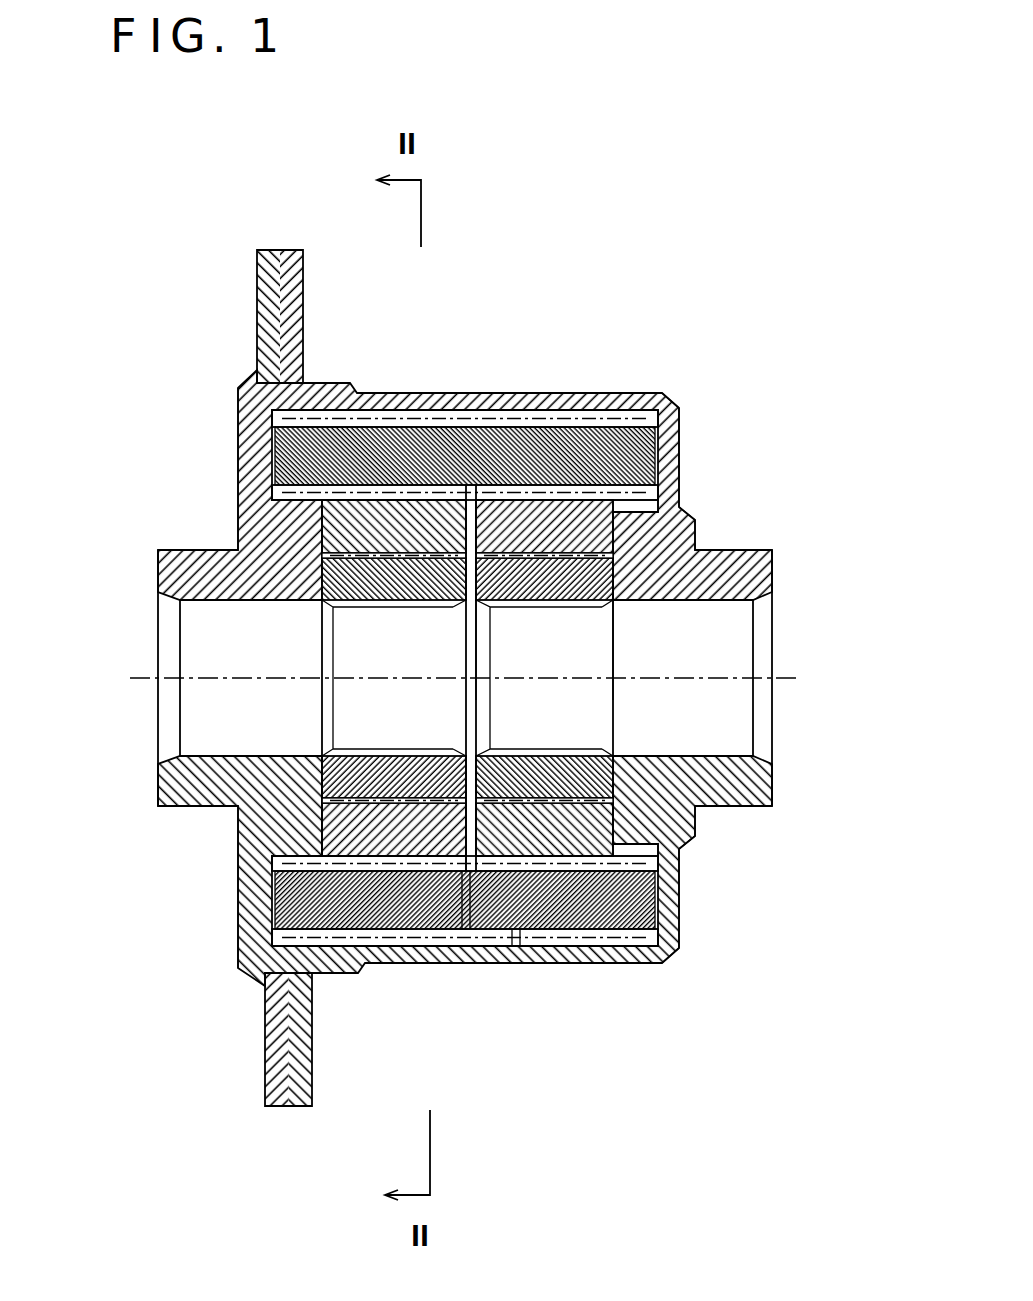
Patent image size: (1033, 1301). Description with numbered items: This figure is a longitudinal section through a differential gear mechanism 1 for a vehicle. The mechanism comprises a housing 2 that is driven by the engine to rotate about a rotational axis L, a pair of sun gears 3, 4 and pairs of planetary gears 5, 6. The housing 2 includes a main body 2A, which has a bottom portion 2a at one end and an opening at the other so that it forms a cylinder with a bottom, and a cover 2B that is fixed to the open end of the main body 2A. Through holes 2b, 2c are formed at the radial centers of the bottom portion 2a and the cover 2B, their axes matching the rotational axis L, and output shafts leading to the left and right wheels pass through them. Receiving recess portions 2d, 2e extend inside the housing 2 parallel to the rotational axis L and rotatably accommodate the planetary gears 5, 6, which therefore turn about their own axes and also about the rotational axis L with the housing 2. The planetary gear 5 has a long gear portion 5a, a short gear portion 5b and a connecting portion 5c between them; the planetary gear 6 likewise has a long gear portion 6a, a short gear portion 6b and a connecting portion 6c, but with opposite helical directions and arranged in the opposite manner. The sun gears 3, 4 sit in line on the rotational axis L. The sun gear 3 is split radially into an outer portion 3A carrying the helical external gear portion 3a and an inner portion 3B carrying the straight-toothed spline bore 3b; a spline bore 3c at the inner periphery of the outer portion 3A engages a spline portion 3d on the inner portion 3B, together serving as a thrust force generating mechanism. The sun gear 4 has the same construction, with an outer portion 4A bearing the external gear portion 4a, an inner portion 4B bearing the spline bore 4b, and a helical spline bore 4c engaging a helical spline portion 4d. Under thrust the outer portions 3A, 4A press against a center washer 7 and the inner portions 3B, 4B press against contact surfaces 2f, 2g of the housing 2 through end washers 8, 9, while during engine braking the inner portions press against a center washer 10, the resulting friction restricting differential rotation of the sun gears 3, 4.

The differential gear mechanism 1 is at (531, 268).
The housing 2 is at (549, 382).
The main body 2A is at (470, 392).
The cover 2B is at (178, 552).
The bottom portion 2a is at (680, 480).
The through hole 2b is at (703, 605).
The through hole 2c is at (207, 607).
The receiving recess portion 2d is at (390, 945).
The receiving recess portion 2e is at (510, 425).
The contact surface 2f is at (268, 540).
The contact surface 2g is at (690, 540).
The first sun gear 3 is at (288, 614).
The outer portion 3A is at (345, 832).
The inner portion 3B is at (330, 792).
The external gear portion 3a is at (381, 490).
The spline bore 3b is at (385, 607).
The spline bore 3c is at (440, 800).
The spline portion 3d is at (386, 798).
The second sun gear 4 is at (650, 614).
The outer portion 4A is at (580, 832).
The inner portion 4B is at (597, 800).
The external gear portion 4a is at (557, 492).
The spline bore 4b is at (585, 605).
The spline bore 4c is at (507, 607).
The spline portion 4d is at (557, 607).
The first planetary gear 5 is at (472, 983).
The long gear portion 5a is at (352, 950).
The short gear portion 5b is at (633, 962).
The connecting portion 5c is at (567, 945).
The second planetary gear 6 is at (473, 378).
The long gear portion 6a is at (625, 410).
The short gear portion 6b is at (322, 408).
The connecting portion 6c is at (436, 422).
The center washer 7 is at (462, 940).
The end washer 8 is at (243, 470).
The end washer 9 is at (677, 462).
The center washer 10 is at (516, 935).
The rotational axis L is at (155, 680).